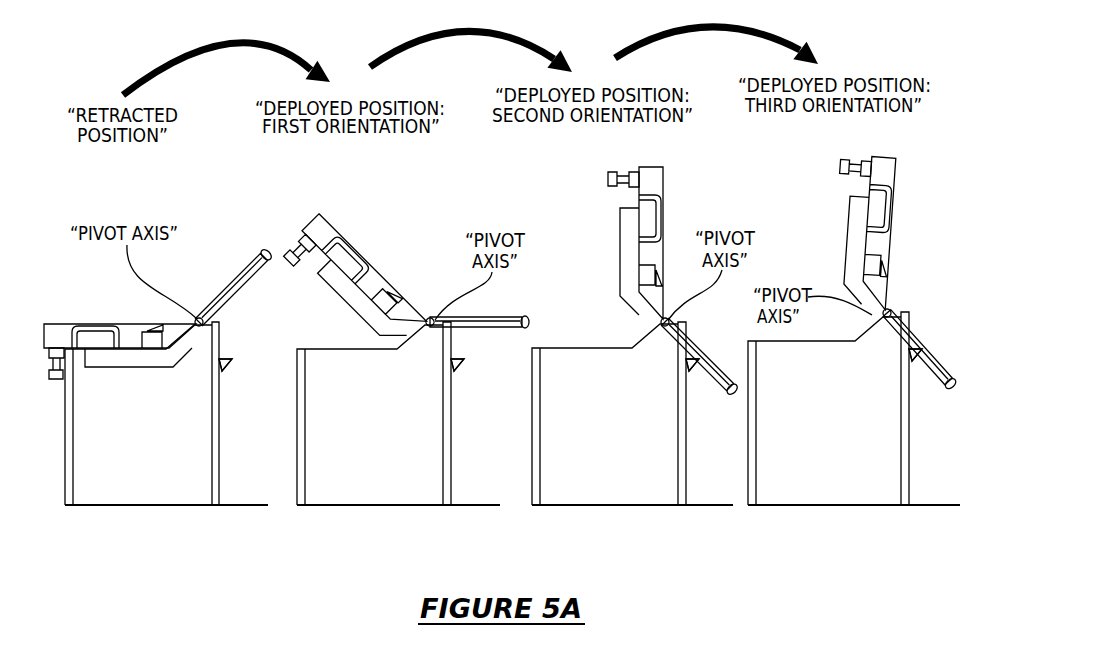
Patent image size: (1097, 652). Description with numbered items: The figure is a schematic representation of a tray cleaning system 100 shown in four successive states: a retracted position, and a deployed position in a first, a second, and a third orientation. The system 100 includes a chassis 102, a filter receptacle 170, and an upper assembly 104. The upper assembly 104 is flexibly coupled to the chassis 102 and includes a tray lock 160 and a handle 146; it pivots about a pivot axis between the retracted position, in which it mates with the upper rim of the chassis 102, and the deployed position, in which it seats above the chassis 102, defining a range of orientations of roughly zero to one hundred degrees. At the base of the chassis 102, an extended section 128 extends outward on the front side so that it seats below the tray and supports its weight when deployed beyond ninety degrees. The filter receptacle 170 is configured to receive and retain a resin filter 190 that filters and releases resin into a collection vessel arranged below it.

The tray cleaning system 100 is at (895, 58).
The chassis 102 is at (838, 482).
The upper assembly 104 is at (858, 255).
The extended section 128 is at (947, 508).
The handle 146 is at (952, 385).
The tray lock 160 is at (842, 162).
The filter receptacle 170 is at (914, 360).
The resin filter 190 is at (586, 407).